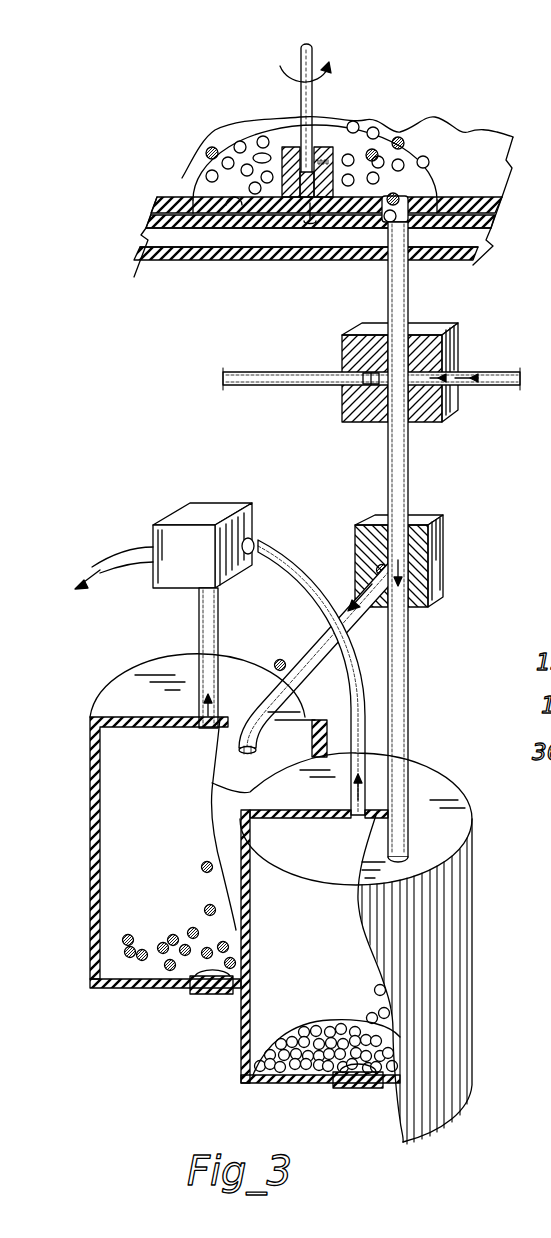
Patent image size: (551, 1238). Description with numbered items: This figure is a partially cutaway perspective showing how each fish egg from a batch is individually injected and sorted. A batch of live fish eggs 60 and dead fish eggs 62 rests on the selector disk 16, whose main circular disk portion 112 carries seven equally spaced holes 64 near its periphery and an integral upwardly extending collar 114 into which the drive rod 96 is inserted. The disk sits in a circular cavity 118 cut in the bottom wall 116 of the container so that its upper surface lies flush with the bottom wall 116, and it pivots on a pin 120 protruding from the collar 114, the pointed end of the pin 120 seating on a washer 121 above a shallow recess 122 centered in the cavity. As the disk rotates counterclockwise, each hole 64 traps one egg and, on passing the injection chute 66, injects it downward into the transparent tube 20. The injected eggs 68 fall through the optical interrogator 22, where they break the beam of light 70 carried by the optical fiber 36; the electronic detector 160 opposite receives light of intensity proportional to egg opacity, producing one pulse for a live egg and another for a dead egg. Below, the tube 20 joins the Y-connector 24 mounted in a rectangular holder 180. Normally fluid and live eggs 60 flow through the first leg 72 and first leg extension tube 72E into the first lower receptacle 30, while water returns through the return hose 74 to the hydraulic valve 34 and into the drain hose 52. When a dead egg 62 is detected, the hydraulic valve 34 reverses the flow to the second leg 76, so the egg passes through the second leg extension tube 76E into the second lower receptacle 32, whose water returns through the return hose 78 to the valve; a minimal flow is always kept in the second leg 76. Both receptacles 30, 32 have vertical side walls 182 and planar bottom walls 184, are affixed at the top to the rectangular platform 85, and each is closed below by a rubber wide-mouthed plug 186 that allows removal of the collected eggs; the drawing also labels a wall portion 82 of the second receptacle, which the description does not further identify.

The selector disk 16 is at (497, 150).
The transparent tube 20 is at (410, 280).
The optical interrogator 22 is at (470, 333).
The Y-connector 24 is at (450, 538).
The first lower receptacle 30 is at (465, 887).
The second lower receptacle 32 is at (128, 675).
The hydraulic valve 34 is at (200, 512).
The optical fiber 36 is at (500, 390).
The drain hose 52 is at (130, 555).
The live fish eggs 60 is at (248, 145).
The dead fish eggs 62 is at (210, 148).
The holes 64 is at (275, 150).
The injection chute 66 is at (375, 226).
The injected eggs 68 is at (405, 338).
The beam of light 70 is at (428, 375).
The first leg 72 is at (412, 585).
The first leg extension tube 72E is at (405, 745).
The return hose 74 is at (350, 666).
The second leg 76 is at (372, 568).
The second leg extension tube 76E is at (268, 745).
The return hose 78 is at (199, 622).
The container side wall 82 is at (92, 953).
The rectangular platform 85 is at (113, 690).
The drive rod 96 is at (311, 55).
The main circular disk portion 112 is at (207, 187).
The collar 114 is at (315, 145).
The bottom wall 116 is at (152, 206).
The circular cavity 118 is at (153, 230).
The pin 120 is at (242, 210).
The washer 121 is at (272, 225).
The shallow recess 122 is at (308, 218).
The electronic detector 160 is at (358, 380).
The rectangular holder 180 is at (433, 597).
The vertical side walls 182 is at (242, 1051).
The planar bottom walls 184 is at (157, 985).
The wide-mouthed plug 186 is at (218, 995).